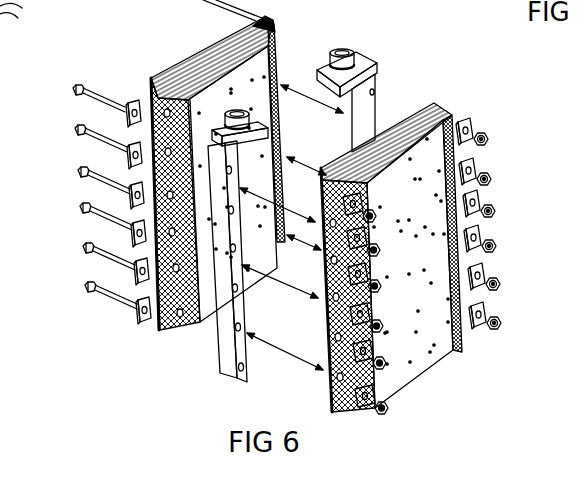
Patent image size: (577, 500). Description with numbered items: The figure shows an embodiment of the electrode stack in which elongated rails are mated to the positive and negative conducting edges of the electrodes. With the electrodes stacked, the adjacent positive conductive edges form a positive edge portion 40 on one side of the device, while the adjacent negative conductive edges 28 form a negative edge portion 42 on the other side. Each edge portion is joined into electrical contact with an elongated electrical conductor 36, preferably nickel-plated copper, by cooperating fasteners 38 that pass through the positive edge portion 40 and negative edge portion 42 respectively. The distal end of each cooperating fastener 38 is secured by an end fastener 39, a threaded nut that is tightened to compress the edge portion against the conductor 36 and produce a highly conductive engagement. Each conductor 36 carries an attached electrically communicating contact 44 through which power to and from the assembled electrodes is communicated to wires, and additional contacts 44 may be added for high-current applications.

The negative conductive edges 28 is at (134, 41).
The electrical conductor 36 is at (222, 352).
The cooperating fasteners 38 is at (97, 93).
The end fastener 39 is at (489, 134).
The positive edge portion 40 is at (273, 33).
The negative edge portion 42 is at (148, 244).
The contact 44 is at (342, 50).